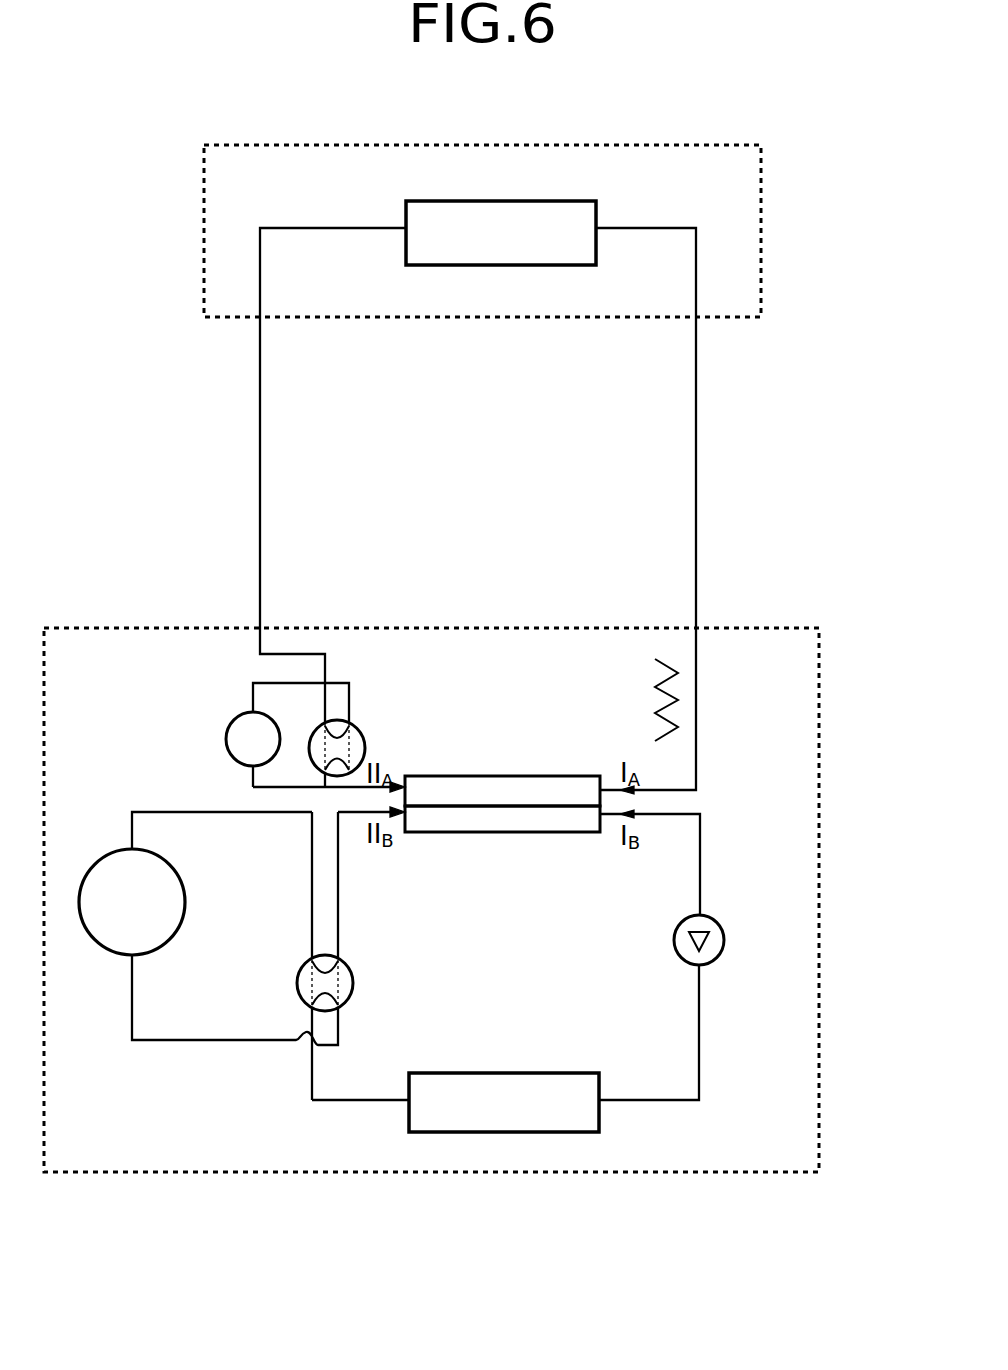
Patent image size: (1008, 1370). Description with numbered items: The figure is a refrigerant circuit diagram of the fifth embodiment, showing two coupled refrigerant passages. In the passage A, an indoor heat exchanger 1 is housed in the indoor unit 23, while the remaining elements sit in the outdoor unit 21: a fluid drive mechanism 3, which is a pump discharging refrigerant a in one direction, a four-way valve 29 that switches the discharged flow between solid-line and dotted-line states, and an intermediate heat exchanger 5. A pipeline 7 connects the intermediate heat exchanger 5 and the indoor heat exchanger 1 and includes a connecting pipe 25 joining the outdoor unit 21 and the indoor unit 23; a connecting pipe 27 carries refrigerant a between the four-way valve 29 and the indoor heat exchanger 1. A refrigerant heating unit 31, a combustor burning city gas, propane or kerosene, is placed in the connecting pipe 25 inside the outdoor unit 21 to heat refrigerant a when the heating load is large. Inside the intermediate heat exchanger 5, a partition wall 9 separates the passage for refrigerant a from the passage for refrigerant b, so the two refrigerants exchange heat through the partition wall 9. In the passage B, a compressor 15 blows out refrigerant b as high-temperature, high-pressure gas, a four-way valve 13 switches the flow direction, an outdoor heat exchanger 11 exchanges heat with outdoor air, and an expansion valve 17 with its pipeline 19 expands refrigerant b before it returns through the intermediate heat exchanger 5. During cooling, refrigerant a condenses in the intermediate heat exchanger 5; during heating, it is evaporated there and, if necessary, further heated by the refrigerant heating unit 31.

The indoor heat exchanger 1 is at (502, 266).
The fluid drive mechanism 3 is at (231, 744).
The intermediate heat exchanger 5 is at (498, 833).
The pipeline 7 is at (712, 385).
The partition wall 9 is at (490, 805).
The outdoor heat exchanger 11 is at (523, 1073).
The 4-way valve 13 is at (351, 962).
The compressor 15 is at (166, 860).
The expansion valve 17 is at (725, 928).
The pipeline 19 is at (700, 895).
The outdoor unit 21 is at (824, 726).
The indoor unit 23 is at (766, 208).
The connecting pipe 25 is at (697, 512).
The connecting pipe 27 is at (259, 488).
The 4-way valve 29 is at (360, 726).
The refrigerant heating unit 31 is at (656, 706).
The passage A is at (762, 471).
The passage B is at (745, 1059).